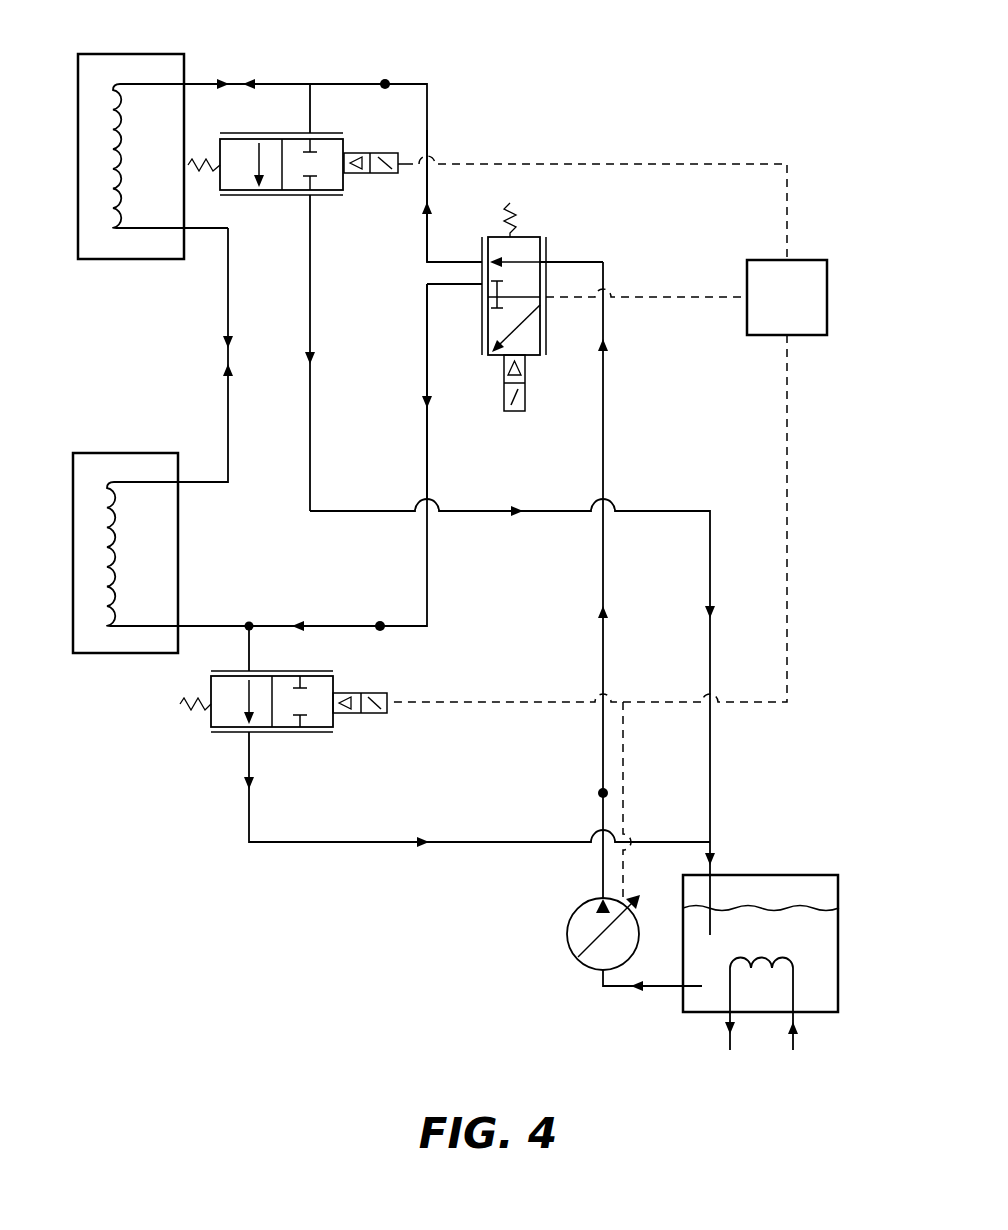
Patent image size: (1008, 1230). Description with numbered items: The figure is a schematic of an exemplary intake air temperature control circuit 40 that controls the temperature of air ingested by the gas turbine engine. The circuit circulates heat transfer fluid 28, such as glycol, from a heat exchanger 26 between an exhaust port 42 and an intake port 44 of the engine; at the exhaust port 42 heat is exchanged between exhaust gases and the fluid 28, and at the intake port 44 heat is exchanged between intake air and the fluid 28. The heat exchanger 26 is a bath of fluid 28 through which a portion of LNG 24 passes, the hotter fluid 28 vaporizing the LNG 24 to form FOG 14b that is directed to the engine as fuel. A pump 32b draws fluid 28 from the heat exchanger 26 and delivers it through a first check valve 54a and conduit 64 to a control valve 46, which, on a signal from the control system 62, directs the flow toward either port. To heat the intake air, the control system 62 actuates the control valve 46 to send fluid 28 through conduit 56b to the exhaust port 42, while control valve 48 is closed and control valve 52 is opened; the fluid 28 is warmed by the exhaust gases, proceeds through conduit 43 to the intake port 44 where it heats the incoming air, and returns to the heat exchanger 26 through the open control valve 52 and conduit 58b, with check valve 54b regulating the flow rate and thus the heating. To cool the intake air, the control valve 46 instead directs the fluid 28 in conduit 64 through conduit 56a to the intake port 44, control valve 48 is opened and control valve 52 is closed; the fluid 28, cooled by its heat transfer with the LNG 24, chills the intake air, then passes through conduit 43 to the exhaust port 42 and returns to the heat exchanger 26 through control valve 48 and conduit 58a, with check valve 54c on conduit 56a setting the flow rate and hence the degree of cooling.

The intake air temperature control circuit 40 is at (133, 722).
The exhaust port 42 is at (97, 247).
The conduit 43 is at (228, 314).
The intake port 44 is at (104, 462).
The control valve 46 is at (546, 250).
The control valve 48 is at (267, 196).
The control valve 52 is at (303, 671).
The first check valve 54a is at (615, 784).
The check valve 54b is at (377, 99).
The check valve 54c is at (374, 640).
The conduit 56a is at (427, 404).
The conduit 56b is at (427, 210).
The conduit 58a is at (310, 328).
The conduit 58b is at (250, 783).
The control system 62 is at (772, 311).
The conduit 64 is at (603, 385).
The pump 32b is at (568, 927).
The heat exchanger 26 is at (838, 892).
The heat transfer fluid 28 is at (825, 948).
The LNG 24 is at (794, 1032).
The FOG 14b is at (729, 1031).